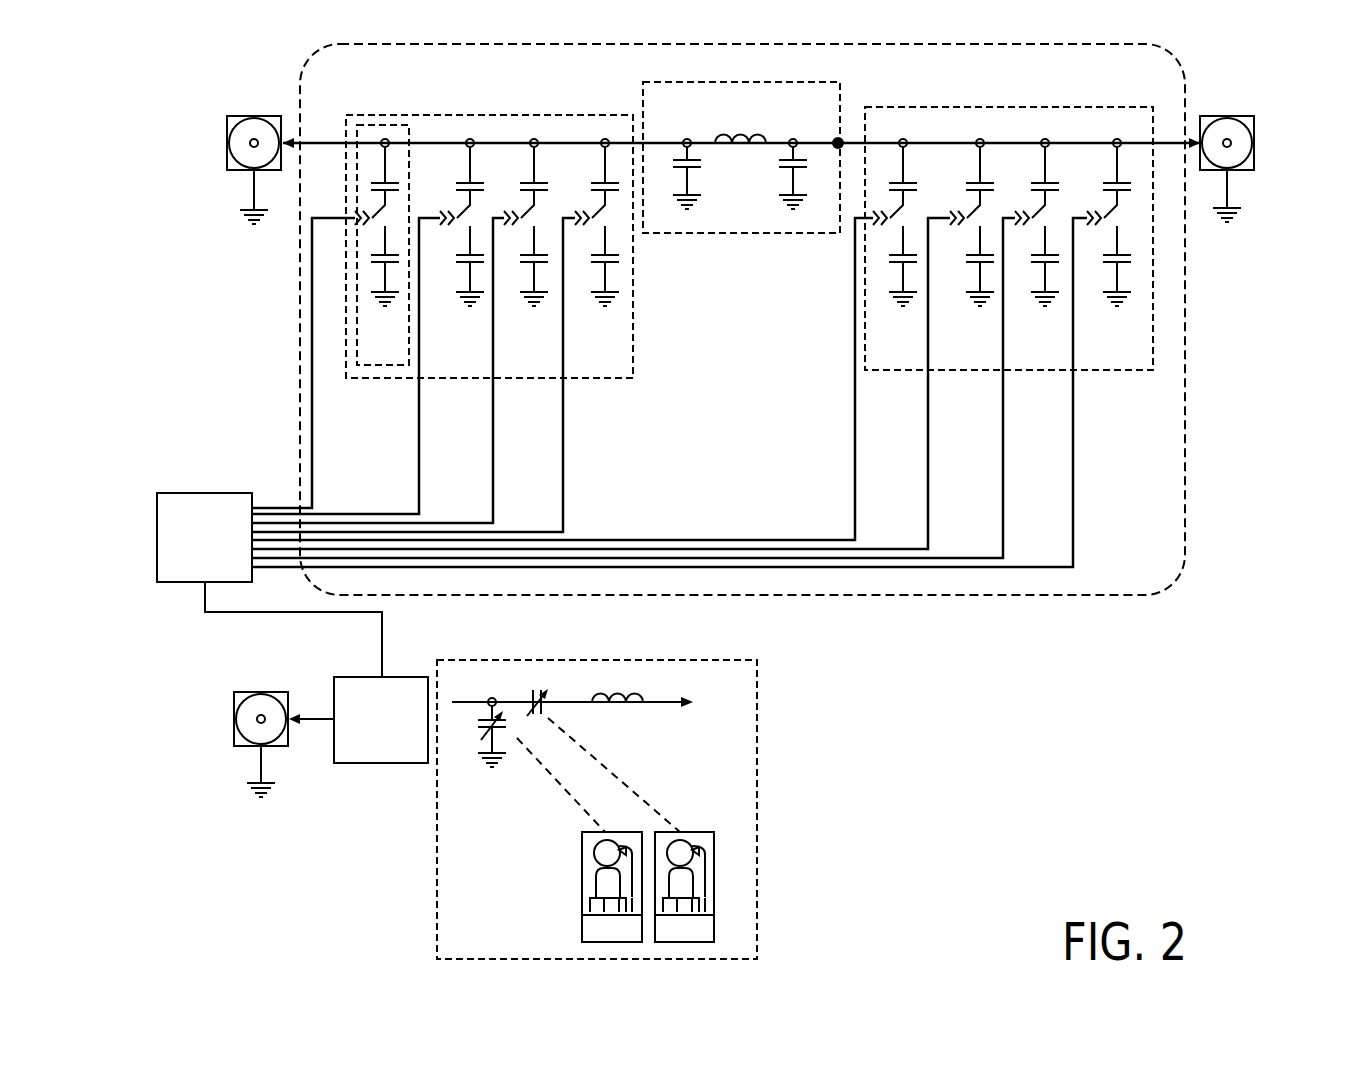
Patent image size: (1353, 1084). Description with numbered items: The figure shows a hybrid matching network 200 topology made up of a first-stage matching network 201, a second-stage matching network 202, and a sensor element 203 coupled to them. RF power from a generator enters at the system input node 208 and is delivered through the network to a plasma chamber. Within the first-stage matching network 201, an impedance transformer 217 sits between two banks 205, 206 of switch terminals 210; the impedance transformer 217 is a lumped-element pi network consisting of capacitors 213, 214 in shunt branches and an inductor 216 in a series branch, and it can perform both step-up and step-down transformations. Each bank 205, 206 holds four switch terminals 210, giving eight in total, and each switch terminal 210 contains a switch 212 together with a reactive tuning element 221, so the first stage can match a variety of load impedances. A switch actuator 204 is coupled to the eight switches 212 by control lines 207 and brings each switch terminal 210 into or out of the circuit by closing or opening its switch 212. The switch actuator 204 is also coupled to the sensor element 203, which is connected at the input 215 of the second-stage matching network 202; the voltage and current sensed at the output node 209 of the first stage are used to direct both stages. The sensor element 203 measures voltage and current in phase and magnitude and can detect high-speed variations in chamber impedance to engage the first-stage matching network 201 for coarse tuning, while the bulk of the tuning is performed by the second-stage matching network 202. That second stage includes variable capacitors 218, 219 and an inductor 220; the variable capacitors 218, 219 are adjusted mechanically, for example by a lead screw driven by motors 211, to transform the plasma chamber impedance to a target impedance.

The hybrid matching network 200 is at (128, 98).
The first-stage matching network 201 is at (848, 597).
The second-stage matching network 202 is at (760, 800).
The sensor element 203 is at (365, 755).
The switch actuator 204 is at (189, 571).
The bank of switch terminals 205 is at (607, 378).
The bank of switch terminals 206 is at (1097, 372).
The control line 207 is at (312, 490).
The system input node 208 is at (228, 145).
The output node 209 is at (1252, 150).
The switch terminal 210 is at (319, 280).
The motor 211 is at (716, 897).
The switch 212 is at (372, 215).
The capacitor 213 is at (802, 160).
The capacitor 214 is at (676, 160).
The input of the second-stage matching network 215 is at (232, 722).
The inductor 216 is at (738, 150).
The impedance transformer 217 is at (741, 191).
The variable capacitor 218 is at (488, 724).
The variable capacitor 219 is at (533, 697).
The inductor 220 is at (625, 708).
The reactive tuning element 221 is at (372, 258).